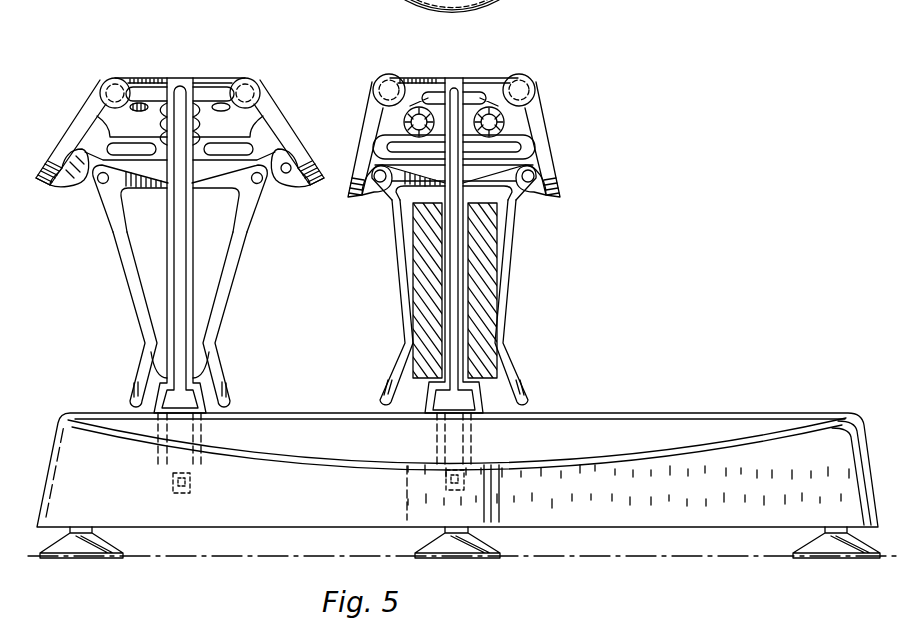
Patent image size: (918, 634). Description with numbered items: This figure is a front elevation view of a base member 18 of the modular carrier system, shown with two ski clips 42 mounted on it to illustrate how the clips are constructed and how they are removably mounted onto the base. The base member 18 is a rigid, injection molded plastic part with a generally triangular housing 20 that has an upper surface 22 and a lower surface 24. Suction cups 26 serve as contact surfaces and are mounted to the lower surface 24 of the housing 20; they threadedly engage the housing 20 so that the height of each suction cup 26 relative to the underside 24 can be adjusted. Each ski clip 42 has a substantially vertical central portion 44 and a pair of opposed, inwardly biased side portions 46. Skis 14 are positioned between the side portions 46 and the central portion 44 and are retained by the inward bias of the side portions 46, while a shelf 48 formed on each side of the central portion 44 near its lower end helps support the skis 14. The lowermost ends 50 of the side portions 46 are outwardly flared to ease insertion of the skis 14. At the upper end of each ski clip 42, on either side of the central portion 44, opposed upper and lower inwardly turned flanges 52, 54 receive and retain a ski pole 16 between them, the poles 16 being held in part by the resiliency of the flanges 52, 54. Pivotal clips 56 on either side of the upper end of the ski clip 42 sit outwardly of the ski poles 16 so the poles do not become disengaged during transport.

The skis 14 is at (430, 335).
The ski poles 16 is at (504, 121).
The base member 18 is at (464, 484).
The housing 20 is at (695, 500).
The upper surface 22 is at (777, 412).
The lower surface 24 is at (617, 522).
The suction cups 26 is at (86, 547).
The ski clip 42 is at (208, 66).
The central portion 44 is at (181, 273).
The side portions 46 is at (138, 298).
The shelf 48 is at (150, 363).
The lowermost ends 50 is at (131, 394).
The upper inwardly turned flange 52 is at (124, 77).
The lower inwardly turned flange 54 is at (88, 118).
The pivotal clips 56 is at (40, 186).